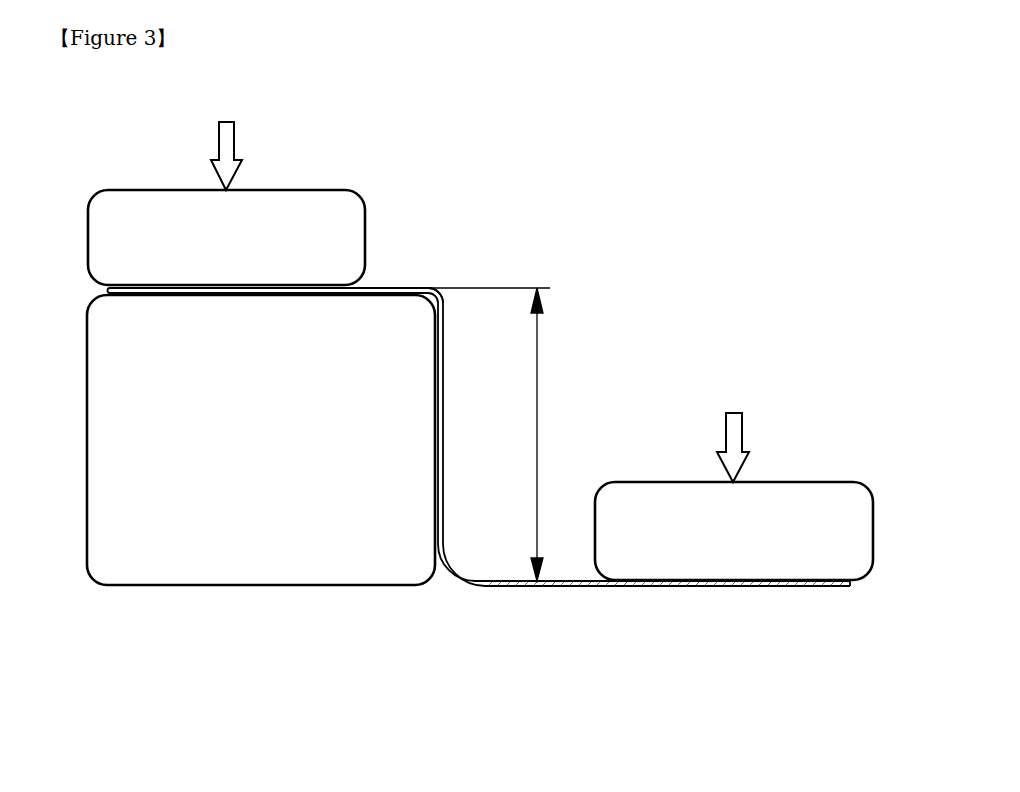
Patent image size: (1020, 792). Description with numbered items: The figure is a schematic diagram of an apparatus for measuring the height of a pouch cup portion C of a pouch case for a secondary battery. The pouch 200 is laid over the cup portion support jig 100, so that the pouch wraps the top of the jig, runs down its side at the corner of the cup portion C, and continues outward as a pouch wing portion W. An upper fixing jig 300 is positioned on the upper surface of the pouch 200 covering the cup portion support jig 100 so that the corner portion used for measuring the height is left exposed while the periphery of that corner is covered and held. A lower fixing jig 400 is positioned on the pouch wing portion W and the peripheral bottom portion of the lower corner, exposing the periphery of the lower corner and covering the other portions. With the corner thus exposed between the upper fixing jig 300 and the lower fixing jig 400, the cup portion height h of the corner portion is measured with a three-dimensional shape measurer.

The cup portion support jig 100 is at (258, 586).
The pouch 200 is at (487, 587).
The upper fixing jig 300 is at (313, 190).
The lower fixing jig 400 is at (819, 482).
The pouch cup portion C is at (452, 330).
The cup portion height h is at (493, 434).
The pouch wing portion W is at (603, 610).